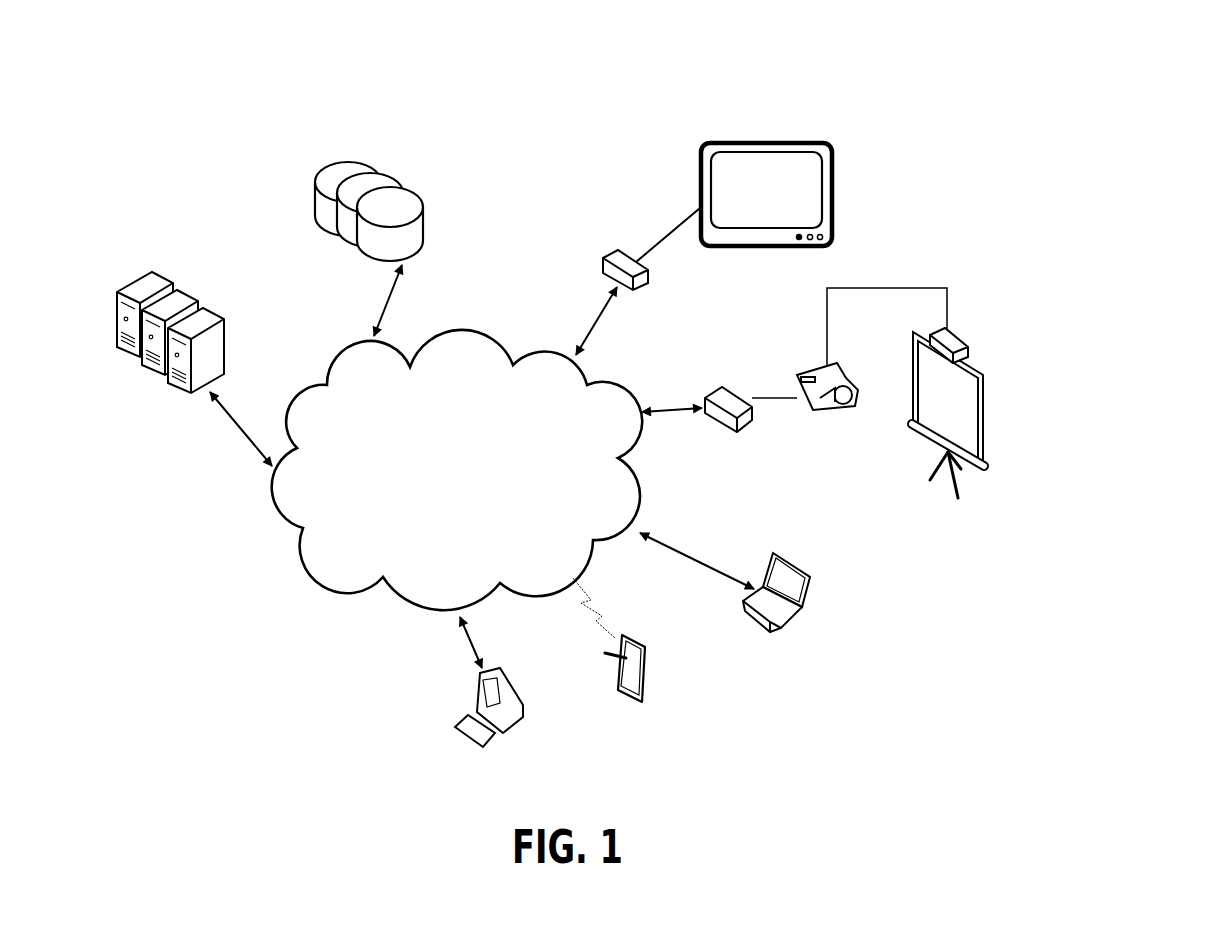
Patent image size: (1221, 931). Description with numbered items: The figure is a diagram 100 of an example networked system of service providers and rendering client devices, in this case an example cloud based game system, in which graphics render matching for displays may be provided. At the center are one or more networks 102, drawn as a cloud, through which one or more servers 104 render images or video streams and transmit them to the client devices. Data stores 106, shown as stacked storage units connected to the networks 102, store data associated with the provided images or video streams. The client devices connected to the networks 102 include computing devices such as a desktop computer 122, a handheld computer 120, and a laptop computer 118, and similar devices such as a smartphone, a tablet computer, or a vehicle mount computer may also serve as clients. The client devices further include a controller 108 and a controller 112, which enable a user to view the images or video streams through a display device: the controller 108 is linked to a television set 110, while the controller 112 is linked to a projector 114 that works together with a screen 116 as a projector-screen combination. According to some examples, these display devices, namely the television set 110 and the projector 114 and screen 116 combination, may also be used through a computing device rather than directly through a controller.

The diagram 100 is at (1079, 60).
The networks 102 is at (440, 466).
The servers 104 is at (135, 256).
The data stores 106 is at (328, 148).
The controller 108 is at (600, 237).
The television set 110 is at (750, 128).
The controller 112 is at (727, 365).
The projector 114 is at (836, 435).
The screen 116 is at (993, 354).
The laptop computer 118 is at (802, 554).
The handheld computer 120 is at (638, 712).
The desktop computer 122 is at (449, 737).